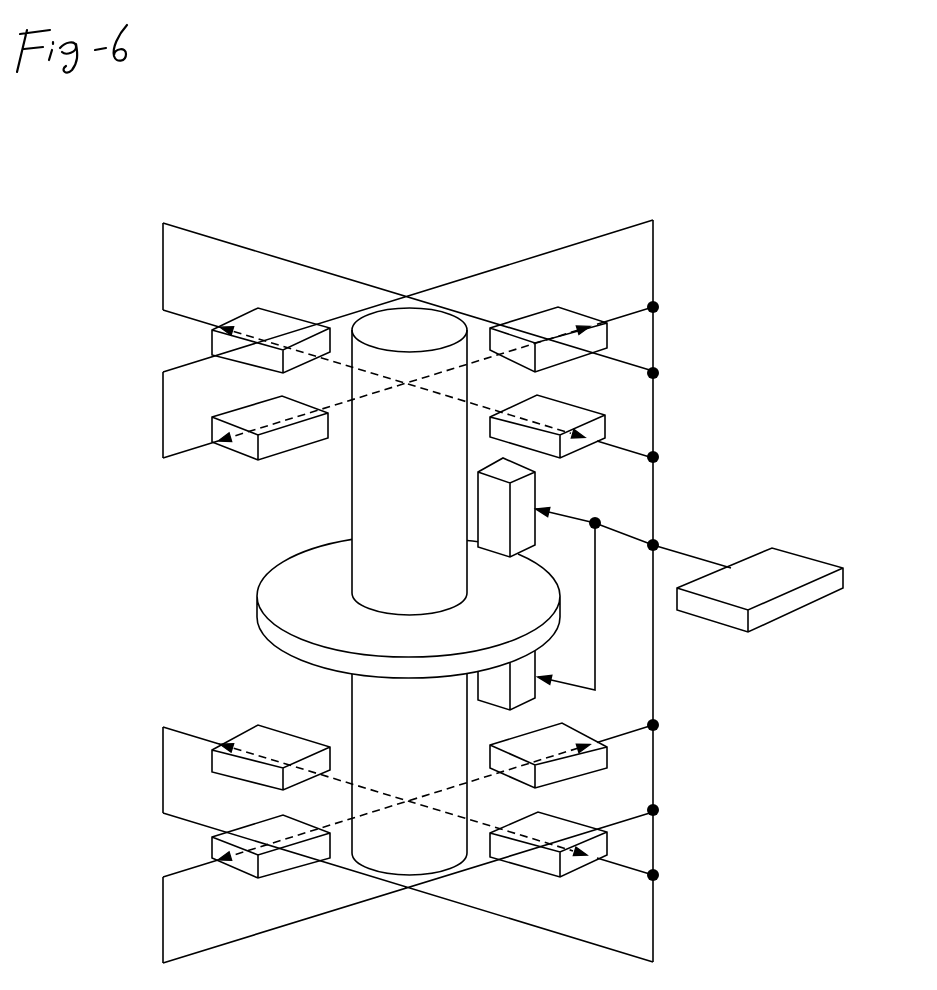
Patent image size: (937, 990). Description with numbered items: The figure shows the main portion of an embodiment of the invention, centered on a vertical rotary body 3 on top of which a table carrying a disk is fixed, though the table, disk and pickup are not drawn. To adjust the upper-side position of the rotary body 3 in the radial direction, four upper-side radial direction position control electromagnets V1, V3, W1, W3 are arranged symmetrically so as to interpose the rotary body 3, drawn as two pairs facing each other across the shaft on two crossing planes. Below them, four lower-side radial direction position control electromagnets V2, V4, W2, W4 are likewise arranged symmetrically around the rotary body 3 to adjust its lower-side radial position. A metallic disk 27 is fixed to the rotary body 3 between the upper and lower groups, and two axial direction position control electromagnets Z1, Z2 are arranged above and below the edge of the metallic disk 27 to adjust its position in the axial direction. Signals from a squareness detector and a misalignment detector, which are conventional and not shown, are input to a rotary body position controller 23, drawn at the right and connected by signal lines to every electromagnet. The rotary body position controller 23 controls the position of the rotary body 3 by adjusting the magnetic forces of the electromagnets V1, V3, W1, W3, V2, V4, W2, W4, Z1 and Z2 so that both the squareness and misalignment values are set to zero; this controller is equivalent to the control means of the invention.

The rotary body 3 is at (352, 462).
The metallic disk 27 is at (258, 600).
The rotary body position controller 23 is at (808, 556).
The upper-side radial direction position control electromagnet W3 is at (228, 320).
The upper-side radial direction position control electromagnet V3 is at (592, 324).
The upper-side radial direction position control electromagnet W1 is at (606, 428).
The upper-side radial direction position control electromagnet V1 is at (222, 447).
The axial direction position control electromagnet Z1 is at (538, 487).
The axial direction position control electromagnet Z2 is at (532, 700).
The lower-side radial direction position control electromagnet W4 is at (213, 763).
The lower-side radial direction position control electromagnet V4 is at (607, 755).
The lower-side radial direction position control electromagnet V2 is at (212, 852).
The lower-side radial direction position control electromagnet W2 is at (583, 867).